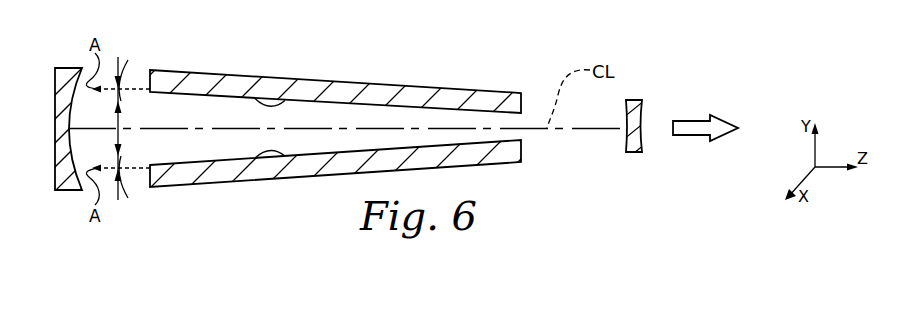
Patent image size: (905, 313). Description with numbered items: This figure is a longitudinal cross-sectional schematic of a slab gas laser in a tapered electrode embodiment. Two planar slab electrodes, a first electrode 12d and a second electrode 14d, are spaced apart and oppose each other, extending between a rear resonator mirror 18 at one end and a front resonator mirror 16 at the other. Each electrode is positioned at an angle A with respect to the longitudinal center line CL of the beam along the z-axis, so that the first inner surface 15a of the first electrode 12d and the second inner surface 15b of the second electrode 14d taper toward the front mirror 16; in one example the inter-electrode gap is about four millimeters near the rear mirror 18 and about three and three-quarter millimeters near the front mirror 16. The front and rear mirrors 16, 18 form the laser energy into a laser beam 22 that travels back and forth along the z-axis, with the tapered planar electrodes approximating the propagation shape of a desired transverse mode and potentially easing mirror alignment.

The rear resonator mirror 18 is at (55, 79).
The first electrode 12d is at (190, 71).
The second electrode 14d is at (178, 188).
The first inner surface 15a is at (292, 99).
The second inner surface 15b is at (292, 157).
The front resonator mirror 16 is at (633, 112).
The laser beam 22 is at (692, 120).